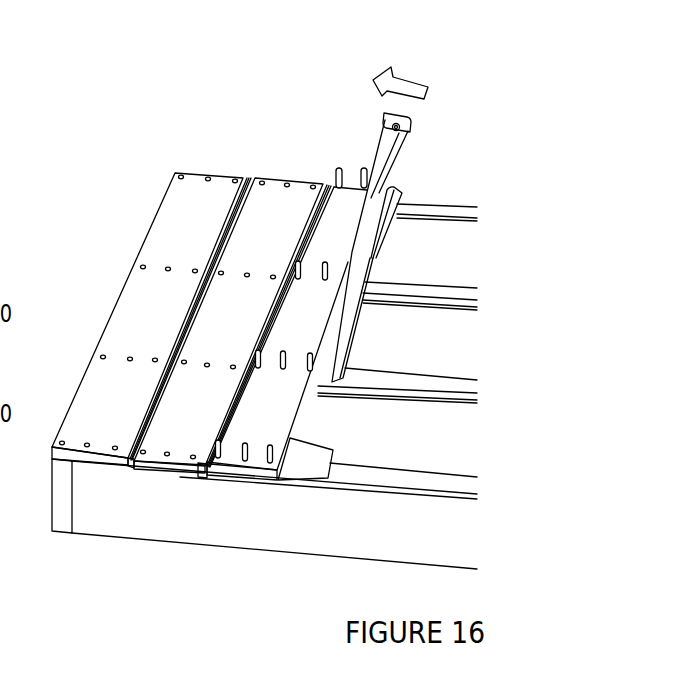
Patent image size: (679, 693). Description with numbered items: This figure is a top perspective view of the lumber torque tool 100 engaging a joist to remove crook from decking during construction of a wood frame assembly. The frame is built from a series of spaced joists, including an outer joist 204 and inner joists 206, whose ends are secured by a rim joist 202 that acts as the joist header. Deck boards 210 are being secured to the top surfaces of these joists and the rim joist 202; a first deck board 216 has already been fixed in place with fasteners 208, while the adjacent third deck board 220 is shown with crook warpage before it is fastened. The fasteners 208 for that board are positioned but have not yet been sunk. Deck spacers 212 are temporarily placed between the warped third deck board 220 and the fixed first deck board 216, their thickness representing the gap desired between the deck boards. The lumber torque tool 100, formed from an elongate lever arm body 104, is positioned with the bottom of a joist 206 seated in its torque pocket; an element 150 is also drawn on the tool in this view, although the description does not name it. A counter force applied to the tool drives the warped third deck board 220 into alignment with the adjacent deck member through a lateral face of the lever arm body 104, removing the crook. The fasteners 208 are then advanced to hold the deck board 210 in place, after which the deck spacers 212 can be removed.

The lumber torque tool 100 is at (371, 325).
The elongate lever arm body 104 is at (373, 263).
The block 150 is at (328, 443).
The rim joist 202 is at (50, 510).
The outer joist 204 is at (245, 550).
The inner joist 206 is at (474, 399).
The fastener 208 is at (241, 456).
The deck board 210 is at (245, 273).
The deck spacer 212 is at (324, 185).
The first deck board 216 is at (196, 170).
The third deck board 220 is at (349, 186).